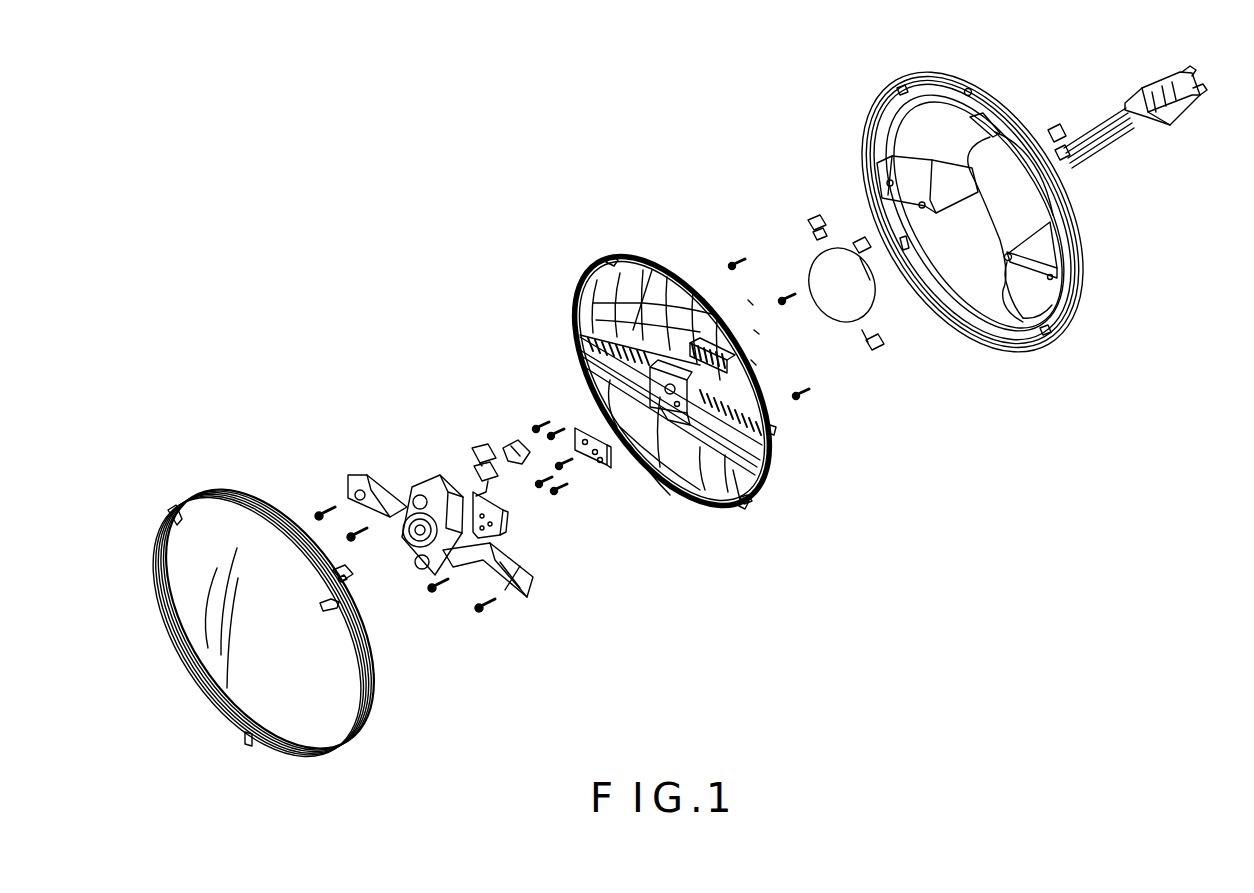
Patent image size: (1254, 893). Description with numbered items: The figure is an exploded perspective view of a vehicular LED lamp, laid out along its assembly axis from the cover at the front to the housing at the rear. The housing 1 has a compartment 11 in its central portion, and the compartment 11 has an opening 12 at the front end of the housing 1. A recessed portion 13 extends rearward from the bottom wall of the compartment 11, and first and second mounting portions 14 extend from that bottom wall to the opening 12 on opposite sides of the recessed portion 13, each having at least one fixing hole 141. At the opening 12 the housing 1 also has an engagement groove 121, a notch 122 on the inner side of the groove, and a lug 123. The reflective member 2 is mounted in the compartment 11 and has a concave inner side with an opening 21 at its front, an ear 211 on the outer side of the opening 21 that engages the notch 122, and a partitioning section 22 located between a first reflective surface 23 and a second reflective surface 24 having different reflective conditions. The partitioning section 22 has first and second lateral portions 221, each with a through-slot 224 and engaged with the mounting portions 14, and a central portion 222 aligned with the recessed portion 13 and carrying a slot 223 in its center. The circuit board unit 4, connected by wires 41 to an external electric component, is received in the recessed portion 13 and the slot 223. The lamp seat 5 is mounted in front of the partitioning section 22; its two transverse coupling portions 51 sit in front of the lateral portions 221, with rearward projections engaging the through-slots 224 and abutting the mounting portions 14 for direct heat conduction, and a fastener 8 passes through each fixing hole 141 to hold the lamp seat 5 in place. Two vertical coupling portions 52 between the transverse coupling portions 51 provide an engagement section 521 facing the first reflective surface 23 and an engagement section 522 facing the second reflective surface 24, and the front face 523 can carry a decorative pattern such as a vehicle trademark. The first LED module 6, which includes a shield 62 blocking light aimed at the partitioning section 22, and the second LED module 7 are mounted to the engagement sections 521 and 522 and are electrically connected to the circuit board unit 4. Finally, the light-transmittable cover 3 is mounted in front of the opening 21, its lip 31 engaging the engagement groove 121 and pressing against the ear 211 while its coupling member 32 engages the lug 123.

The housing 1 is at (1014, 234).
The compartment 11 is at (990, 300).
The opening 12 is at (948, 298).
The engagement groove 121 is at (977, 310).
The notch 122 is at (1050, 322).
The lug 123 is at (1082, 180).
The recessed portion 13 is at (1080, 195).
The first and second mounting portions 14 is at (1080, 252).
The fixing hole 141 is at (1022, 312).
The reflective member 2 is at (664, 382).
The opening 21 is at (675, 490).
The ear 211 is at (750, 502).
The partitioning section 22 is at (773, 432).
The first and second lateral portions 221 is at (582, 335).
The central portion 222 is at (647, 257).
The slot 223 is at (740, 507).
The through-slot 224 is at (603, 360).
The first reflective surface 23 is at (643, 303).
The second reflective surface 24 is at (705, 457).
The cover 3 is at (168, 487).
The lip 31 is at (370, 640).
The coupling member 32 is at (347, 580).
The circuit board unit 4 is at (600, 465).
The wires 41 is at (1125, 142).
The lamp seat 5 is at (444, 542).
The transverse coupling portion 51 is at (387, 477).
The vertical coupling portions 52 is at (460, 570).
The engagement section 521 is at (432, 480).
The engagement section 522 is at (448, 563).
The front face 523 is at (390, 543).
The first LED module 6 is at (505, 462).
The shield 62 is at (512, 448).
The second LED module 7 is at (497, 503).
The fastener 8 is at (535, 428).